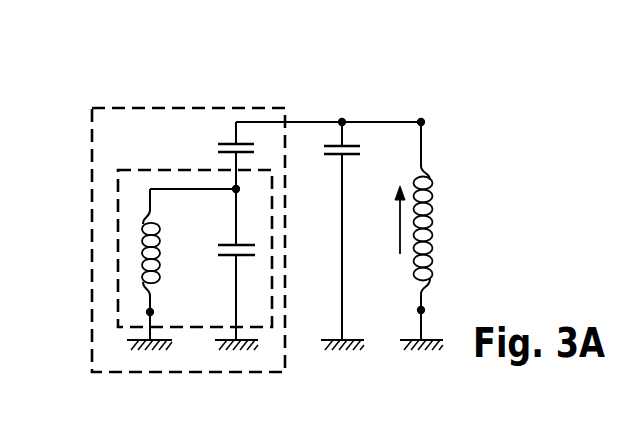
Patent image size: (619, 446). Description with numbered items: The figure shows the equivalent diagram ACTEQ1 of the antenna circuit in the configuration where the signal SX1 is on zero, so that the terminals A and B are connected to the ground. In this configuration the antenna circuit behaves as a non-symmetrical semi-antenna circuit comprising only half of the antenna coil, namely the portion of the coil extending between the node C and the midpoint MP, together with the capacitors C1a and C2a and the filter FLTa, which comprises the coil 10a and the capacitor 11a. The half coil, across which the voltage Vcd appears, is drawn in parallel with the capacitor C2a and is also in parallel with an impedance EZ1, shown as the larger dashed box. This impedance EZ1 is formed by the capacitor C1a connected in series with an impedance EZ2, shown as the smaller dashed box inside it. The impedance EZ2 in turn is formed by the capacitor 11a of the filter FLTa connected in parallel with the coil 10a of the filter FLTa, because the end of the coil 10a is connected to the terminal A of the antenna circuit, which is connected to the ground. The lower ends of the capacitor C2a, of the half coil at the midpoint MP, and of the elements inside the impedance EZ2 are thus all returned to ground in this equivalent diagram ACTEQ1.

The impedance EZ1 is at (194, 107).
The impedance EZ2 is at (118, 170).
The capacitor C1a is at (218, 144).
The capacitor 11a is at (226, 244).
The coil 10a is at (142, 250).
The filter FLTa is at (187, 329).
The equivalent diagram of the antenna circuit ACTEQ1 is at (341, 100).
The capacitor C2a is at (328, 156).
The voltage across the coil Vcd is at (380, 220).
The midpoint MP is at (424, 310).